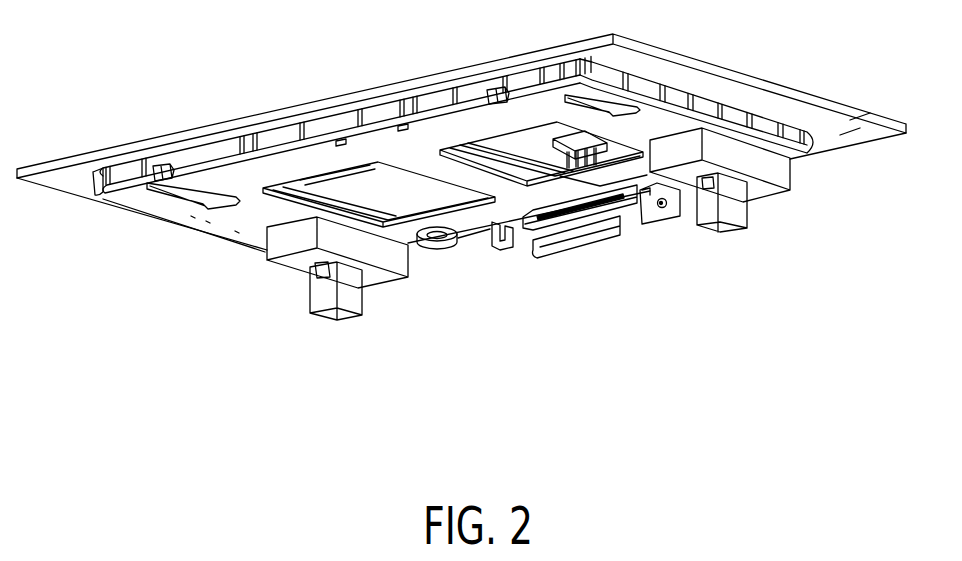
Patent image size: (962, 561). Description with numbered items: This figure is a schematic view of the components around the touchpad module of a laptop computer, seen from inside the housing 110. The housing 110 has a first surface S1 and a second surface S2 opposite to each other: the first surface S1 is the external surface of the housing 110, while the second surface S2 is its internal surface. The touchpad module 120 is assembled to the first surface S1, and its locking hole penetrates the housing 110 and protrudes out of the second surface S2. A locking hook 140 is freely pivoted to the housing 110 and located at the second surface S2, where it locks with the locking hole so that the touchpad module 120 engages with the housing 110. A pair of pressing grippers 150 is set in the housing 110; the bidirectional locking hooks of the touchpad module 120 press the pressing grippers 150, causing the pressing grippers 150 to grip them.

The housing 110 is at (858, 105).
The touchpad module 120 is at (382, 177).
The locking hook 140 is at (577, 250).
The pressing grippers 150 is at (334, 318).
The first surface S1 is at (331, 199).
The second surface S2 is at (833, 127).